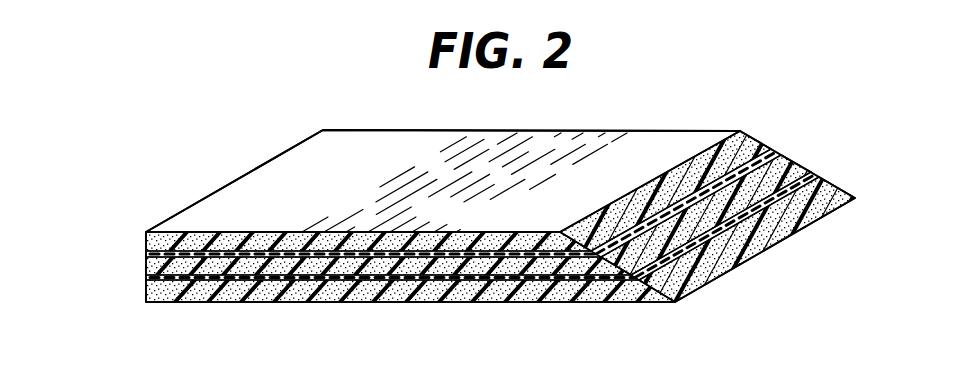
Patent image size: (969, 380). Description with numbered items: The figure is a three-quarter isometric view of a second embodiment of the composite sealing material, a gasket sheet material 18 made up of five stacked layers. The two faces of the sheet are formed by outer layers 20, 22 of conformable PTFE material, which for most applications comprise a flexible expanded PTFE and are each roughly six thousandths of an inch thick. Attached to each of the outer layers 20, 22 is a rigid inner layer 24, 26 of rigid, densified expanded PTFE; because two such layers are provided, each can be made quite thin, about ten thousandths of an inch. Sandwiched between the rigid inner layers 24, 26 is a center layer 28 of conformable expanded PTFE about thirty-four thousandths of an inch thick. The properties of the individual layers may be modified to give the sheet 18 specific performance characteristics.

The gasket sheet material 18 is at (762, 110).
The outer layer 20 is at (665, 142).
The outer layer 22 is at (230, 302).
The rigid inner layer 24 is at (773, 148).
The rigid inner layer 26 is at (810, 177).
The center layer 28 is at (146, 262).